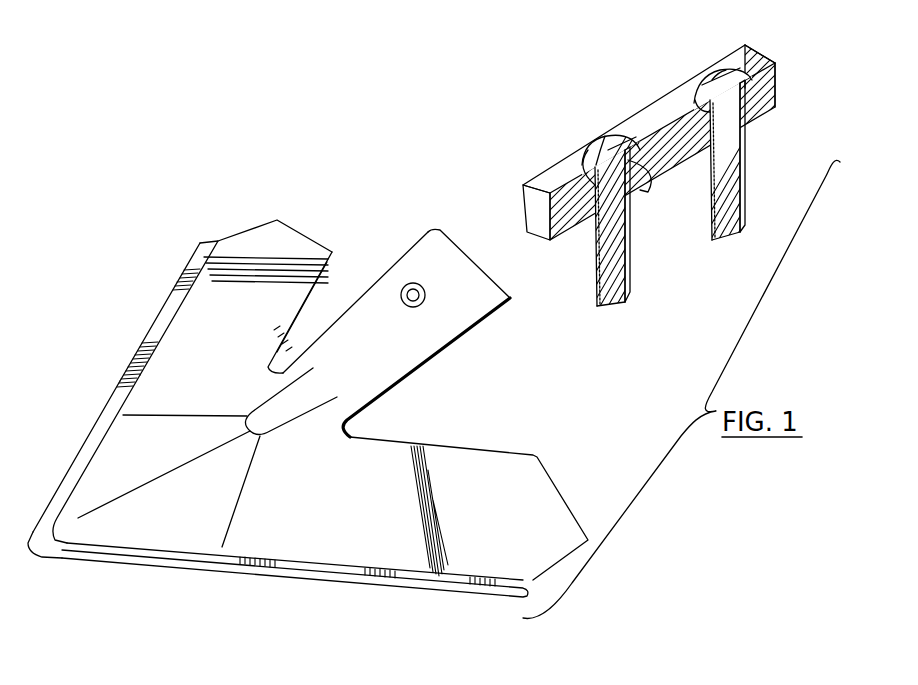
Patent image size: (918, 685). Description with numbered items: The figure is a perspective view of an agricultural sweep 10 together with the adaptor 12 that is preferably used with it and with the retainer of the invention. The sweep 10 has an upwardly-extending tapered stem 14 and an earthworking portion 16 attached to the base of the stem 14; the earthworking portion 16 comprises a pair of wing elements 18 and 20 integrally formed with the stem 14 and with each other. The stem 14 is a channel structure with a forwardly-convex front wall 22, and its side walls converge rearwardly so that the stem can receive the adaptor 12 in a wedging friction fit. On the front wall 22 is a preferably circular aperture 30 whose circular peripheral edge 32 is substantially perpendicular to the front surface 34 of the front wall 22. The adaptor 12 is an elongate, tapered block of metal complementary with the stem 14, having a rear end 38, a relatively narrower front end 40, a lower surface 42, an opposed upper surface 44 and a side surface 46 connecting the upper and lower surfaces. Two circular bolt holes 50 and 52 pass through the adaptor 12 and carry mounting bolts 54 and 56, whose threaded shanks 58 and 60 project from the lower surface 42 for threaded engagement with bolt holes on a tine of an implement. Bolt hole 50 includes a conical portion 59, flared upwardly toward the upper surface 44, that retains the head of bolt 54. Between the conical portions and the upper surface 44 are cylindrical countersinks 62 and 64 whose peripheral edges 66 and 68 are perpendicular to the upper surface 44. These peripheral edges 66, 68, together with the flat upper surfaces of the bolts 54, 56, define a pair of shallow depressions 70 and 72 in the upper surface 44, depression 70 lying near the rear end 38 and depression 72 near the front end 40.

The sweep 10 is at (126, 262).
The adaptor 12 is at (510, 65).
The stem 14 is at (370, 290).
The earthworking portion 16 is at (90, 475).
The wing element 18 is at (170, 357).
The wing element 20 is at (318, 547).
The front wall 22 is at (448, 258).
The aperture 30 is at (413, 307).
The circular peripheral edge 32 is at (411, 283).
The front surface 34 is at (470, 278).
The rear end 38 is at (773, 82).
The front end 40 is at (537, 219).
The lower surface 42 is at (700, 167).
The upper surface 44 is at (683, 107).
The side surface 46 is at (657, 95).
The bolt hole 50 is at (712, 82).
The bolt hole 52 is at (583, 146).
The mounting bolt 54 is at (743, 162).
The mounting bolt 56 is at (593, 257).
The threaded shank 58 is at (743, 192).
The conical portion 59 is at (750, 87).
The threaded shank 60 is at (572, 233).
The countersink 62 is at (768, 70).
The countersink 64 is at (637, 120).
The peripheral edge 66 is at (717, 63).
The peripheral edge 68 is at (603, 126).
The shallow depression 70 is at (713, 90).
The shallow depression 72 is at (647, 190).